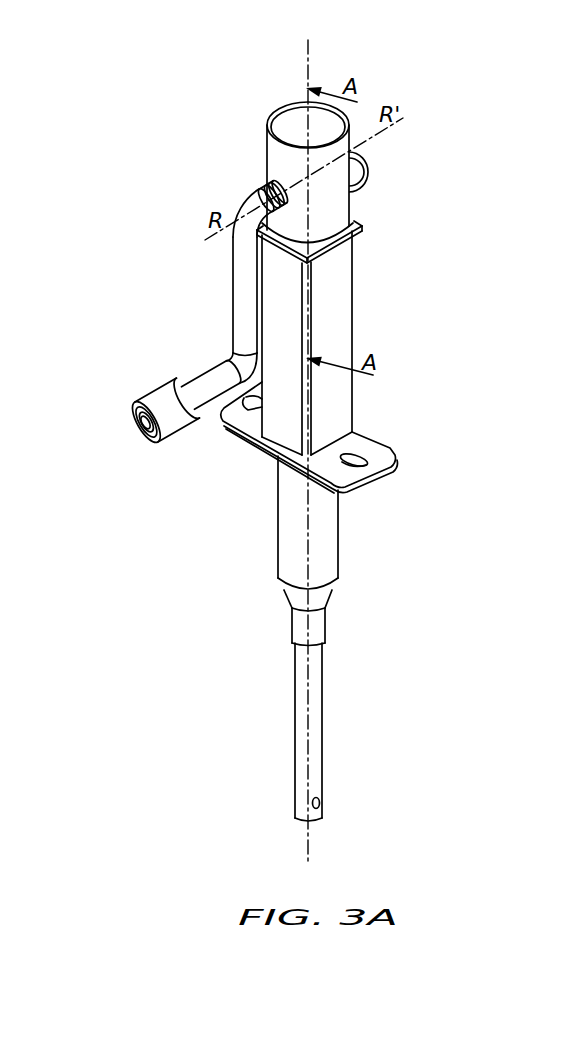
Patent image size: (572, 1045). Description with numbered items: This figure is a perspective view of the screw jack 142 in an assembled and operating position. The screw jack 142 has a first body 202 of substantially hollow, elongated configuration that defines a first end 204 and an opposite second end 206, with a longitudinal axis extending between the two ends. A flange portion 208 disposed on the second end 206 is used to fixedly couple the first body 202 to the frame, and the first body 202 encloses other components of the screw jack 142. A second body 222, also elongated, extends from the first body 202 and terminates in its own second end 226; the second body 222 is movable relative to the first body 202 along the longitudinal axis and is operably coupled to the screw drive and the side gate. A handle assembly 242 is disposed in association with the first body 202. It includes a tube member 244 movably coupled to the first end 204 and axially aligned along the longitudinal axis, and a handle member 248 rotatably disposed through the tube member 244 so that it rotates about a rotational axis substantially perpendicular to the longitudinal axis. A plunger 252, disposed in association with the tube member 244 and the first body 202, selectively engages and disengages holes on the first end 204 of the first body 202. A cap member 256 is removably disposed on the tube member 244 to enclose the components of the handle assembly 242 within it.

The screw jack 142 is at (400, 450).
The first body 202 is at (340, 282).
The first end 204 is at (380, 215).
The second end 206 is at (408, 447).
The flange portion 208 is at (240, 435).
The second body 222 is at (328, 544).
The second end 226 is at (340, 803).
The handle assembly 242 is at (240, 126).
The tube member 244 is at (273, 163).
The handle member 248 is at (242, 307).
The plunger 252 is at (368, 165).
The cap member 256 is at (290, 112).